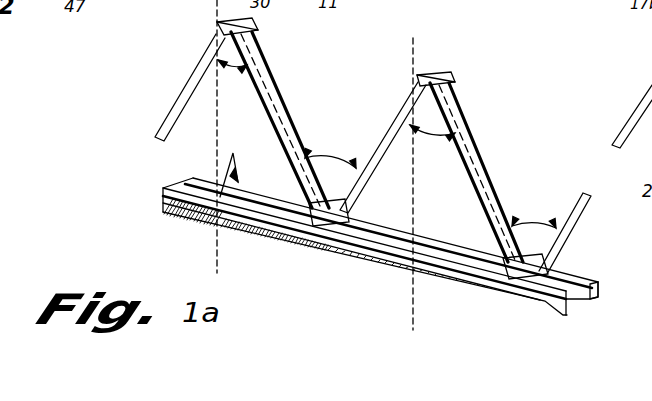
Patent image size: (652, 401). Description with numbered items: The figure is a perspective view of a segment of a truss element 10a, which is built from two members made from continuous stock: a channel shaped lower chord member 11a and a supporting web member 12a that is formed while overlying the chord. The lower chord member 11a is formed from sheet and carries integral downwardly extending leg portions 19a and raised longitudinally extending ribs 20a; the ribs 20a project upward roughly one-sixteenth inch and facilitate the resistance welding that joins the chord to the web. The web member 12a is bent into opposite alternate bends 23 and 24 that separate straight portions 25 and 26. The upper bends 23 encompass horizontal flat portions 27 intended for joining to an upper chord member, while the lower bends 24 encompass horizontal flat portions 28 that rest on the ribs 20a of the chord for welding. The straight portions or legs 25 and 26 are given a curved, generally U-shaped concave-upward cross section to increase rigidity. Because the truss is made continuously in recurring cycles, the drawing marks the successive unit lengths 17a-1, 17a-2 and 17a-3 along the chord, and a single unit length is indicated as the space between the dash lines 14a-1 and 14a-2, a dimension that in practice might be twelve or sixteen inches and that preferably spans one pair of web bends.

The truss element 10a is at (123, 124).
The channel shaped lower chord member 11a is at (496, 296).
The supporting web member 12a is at (494, 167).
The downwardly extending leg portion 19a is at (578, 301).
The raised longitudinally extending rib 20a is at (236, 166).
The bend 23 is at (233, 68).
The bend 24 is at (533, 223).
The straight portion 25 is at (302, 126).
The straight portion 26 is at (171, 110).
The horizontal flat portion 27 is at (252, 20).
The horizontal flat portion 28 is at (325, 215).
The unit length of truss 17a-1 is at (214, 240).
The unit length of truss 17a-2 is at (411, 300).
The unit length of truss 17a-3 is at (417, 303).
The dash line 14a-1 is at (217, 273).
The dash line 14a-2 is at (405, 322).